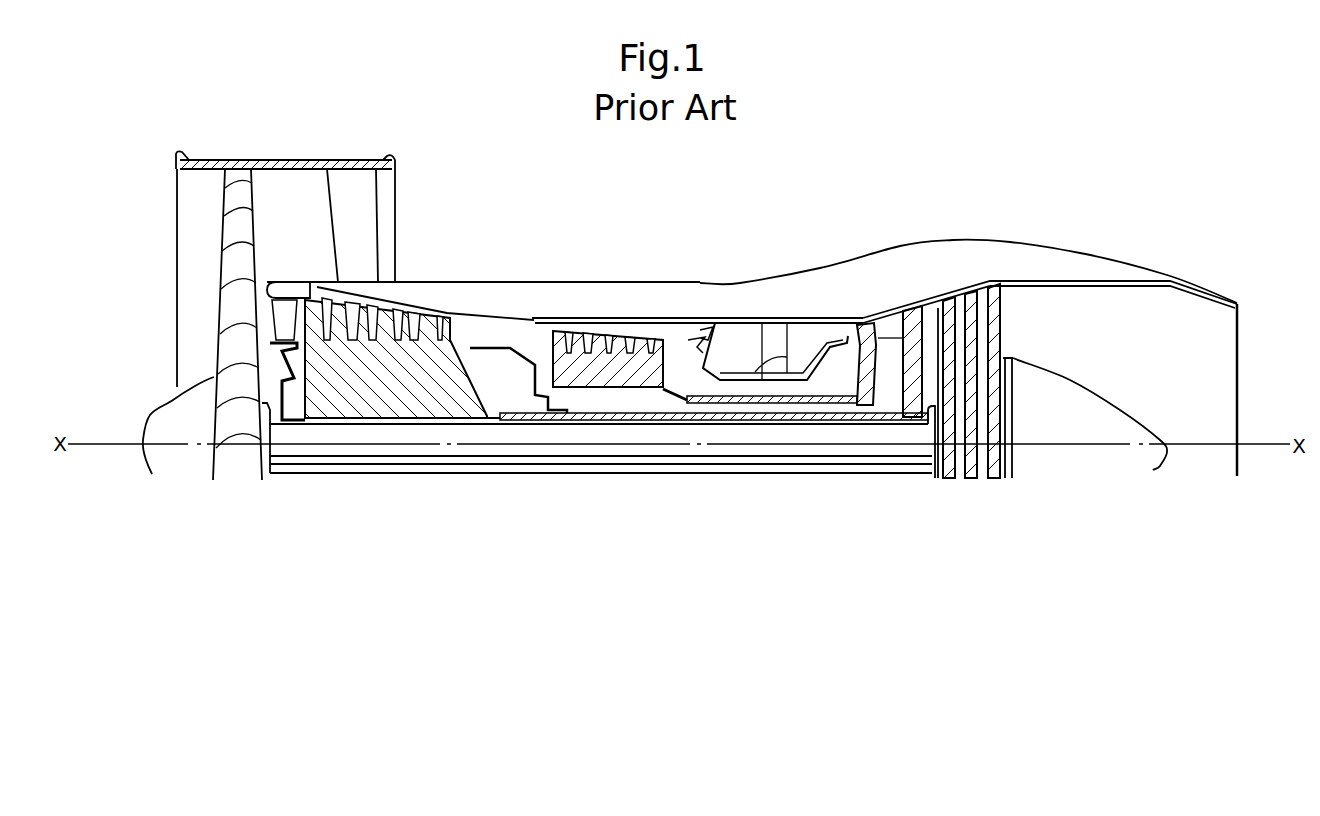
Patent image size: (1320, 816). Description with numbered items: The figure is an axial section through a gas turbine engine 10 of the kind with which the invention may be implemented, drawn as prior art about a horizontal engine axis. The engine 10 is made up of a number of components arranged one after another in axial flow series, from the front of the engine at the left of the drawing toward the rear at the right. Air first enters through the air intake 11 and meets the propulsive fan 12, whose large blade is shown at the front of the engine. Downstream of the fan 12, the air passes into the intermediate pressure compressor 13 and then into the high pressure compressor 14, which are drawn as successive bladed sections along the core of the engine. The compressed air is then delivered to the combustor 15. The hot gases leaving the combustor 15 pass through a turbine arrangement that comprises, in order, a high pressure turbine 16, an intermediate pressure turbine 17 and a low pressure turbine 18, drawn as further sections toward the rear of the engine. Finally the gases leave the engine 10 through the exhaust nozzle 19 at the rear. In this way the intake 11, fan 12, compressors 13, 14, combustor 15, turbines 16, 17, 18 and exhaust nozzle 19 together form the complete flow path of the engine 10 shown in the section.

The gas turbine engine 10 is at (556, 226).
The air intake 11 is at (145, 280).
The propulsive fan 12 is at (243, 197).
The intermediate pressure compressor 13 is at (390, 360).
The high pressure compressor 14 is at (610, 333).
The combustor 15 is at (781, 308).
The high pressure turbine 16 is at (867, 317).
The intermediate pressure turbine 17 is at (944, 303).
The low pressure turbine 18 is at (1000, 307).
The exhaust nozzle 19 is at (1200, 398).